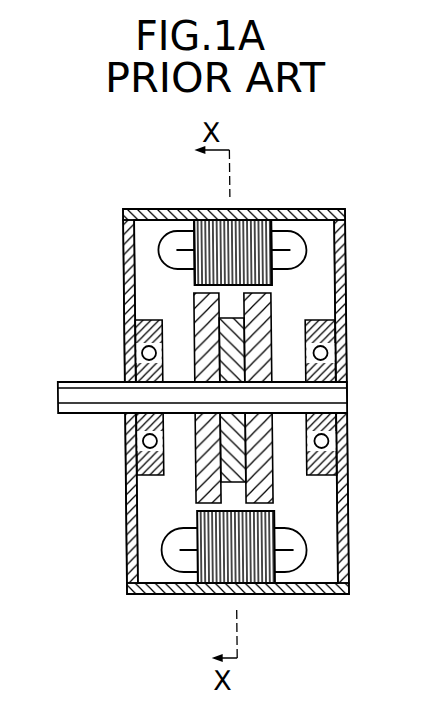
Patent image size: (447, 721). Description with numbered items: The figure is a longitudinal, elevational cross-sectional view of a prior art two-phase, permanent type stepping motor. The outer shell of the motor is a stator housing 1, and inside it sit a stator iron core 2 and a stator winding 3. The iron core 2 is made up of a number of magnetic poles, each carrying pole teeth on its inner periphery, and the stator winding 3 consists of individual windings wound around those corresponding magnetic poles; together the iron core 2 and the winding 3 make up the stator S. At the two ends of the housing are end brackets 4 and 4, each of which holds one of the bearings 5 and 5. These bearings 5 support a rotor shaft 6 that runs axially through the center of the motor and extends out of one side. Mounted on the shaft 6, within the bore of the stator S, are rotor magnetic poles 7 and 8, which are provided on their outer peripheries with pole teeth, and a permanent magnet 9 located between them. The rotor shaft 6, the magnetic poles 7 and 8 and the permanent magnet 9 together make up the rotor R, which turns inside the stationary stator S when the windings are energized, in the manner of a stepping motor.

The stator housing 1 is at (153, 210).
The stator iron core 2 is at (202, 212).
The stator winding 3 is at (300, 236).
The end bracket 4 is at (125, 248).
The bearing 5 is at (136, 334).
The rotor shaft 6 is at (80, 382).
The rotor magnetic pole 7 is at (221, 470).
The rotor magnetic pole 8 is at (262, 470).
The permanent magnet 9 is at (227, 455).
The stator S is at (267, 212).
The rotor R is at (238, 429).